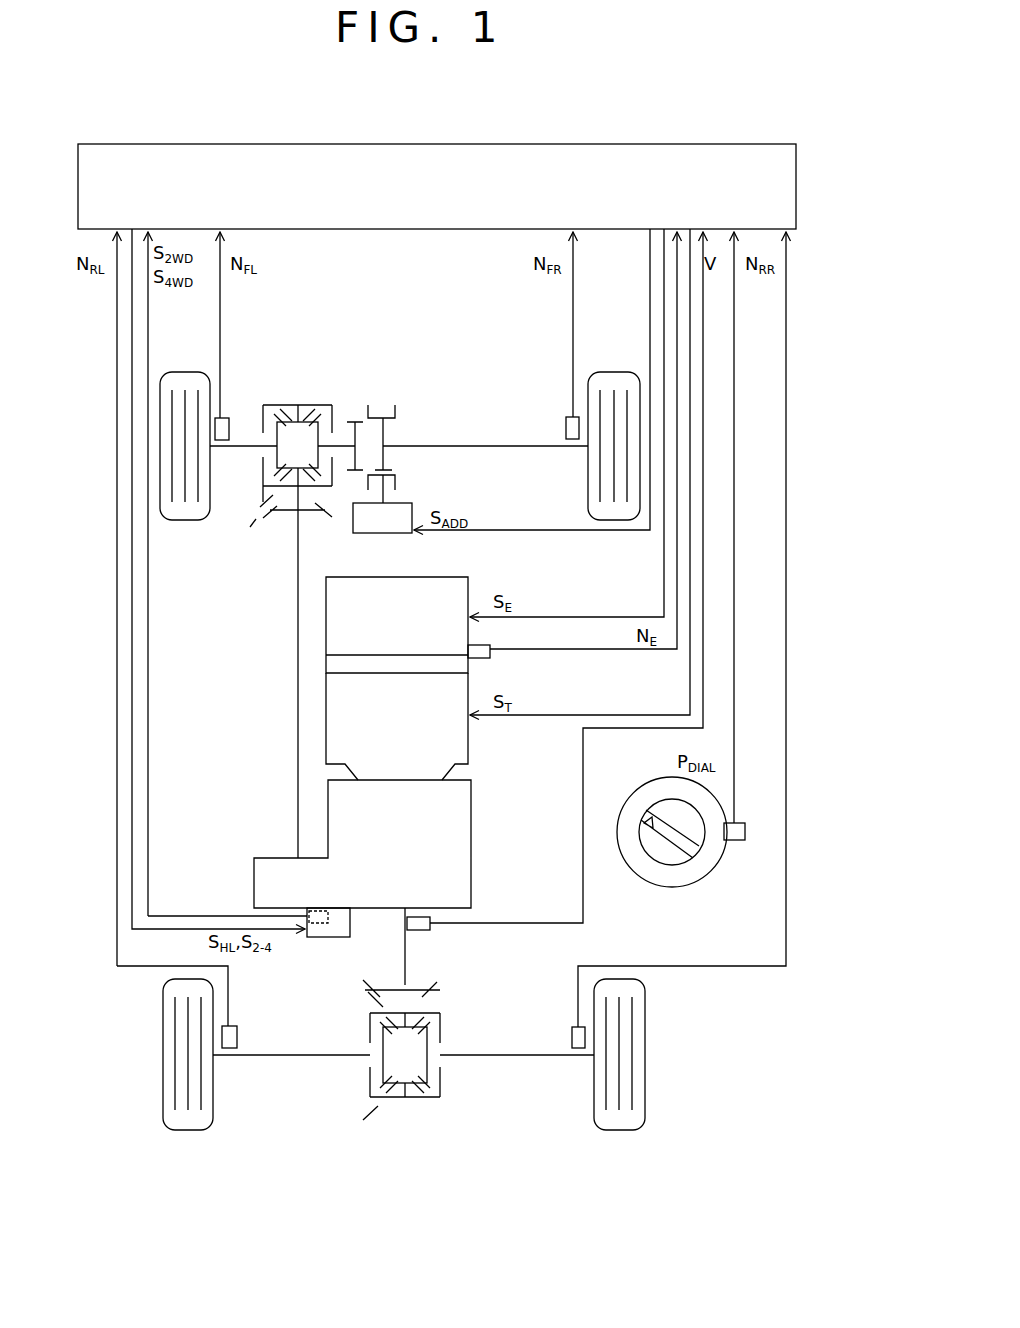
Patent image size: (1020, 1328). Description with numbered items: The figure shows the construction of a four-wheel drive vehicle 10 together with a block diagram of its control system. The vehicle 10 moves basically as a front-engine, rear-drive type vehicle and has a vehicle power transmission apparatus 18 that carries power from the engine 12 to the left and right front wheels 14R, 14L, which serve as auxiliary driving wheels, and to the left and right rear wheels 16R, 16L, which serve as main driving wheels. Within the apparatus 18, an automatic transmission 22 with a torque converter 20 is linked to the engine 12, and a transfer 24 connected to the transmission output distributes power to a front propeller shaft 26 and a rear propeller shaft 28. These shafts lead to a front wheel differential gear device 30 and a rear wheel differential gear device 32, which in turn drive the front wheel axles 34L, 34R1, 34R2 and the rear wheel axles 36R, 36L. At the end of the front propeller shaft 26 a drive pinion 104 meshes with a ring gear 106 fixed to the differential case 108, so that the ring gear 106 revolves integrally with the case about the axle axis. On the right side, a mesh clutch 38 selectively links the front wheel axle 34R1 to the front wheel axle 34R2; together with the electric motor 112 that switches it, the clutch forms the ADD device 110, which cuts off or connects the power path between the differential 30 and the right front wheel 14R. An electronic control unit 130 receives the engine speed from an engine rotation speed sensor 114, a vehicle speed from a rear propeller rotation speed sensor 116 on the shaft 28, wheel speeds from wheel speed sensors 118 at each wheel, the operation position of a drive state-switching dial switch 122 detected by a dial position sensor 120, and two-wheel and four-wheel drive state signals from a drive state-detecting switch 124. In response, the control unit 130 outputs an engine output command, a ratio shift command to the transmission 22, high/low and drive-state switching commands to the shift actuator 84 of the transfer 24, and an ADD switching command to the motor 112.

The vehicle 10 is at (626, 106).
The engine 12 is at (468, 590).
The left front wheel 14L is at (178, 382).
The right front wheel 14R is at (605, 382).
The left rear wheel 16L is at (161, 1098).
The right rear wheel 16R is at (642, 1095).
The vehicle power transmission apparatus 18 is at (373, 1180).
The torque converter 20 is at (462, 668).
The automatic transmission 22 is at (458, 753).
The transfer 24 is at (460, 890).
The front propeller shaft 26 is at (298, 702).
The rear propeller shaft 28 is at (407, 963).
The front wheel differential gear device 30 is at (252, 526).
The rear wheel differential gear device 32 is at (412, 1126).
The left front wheel axle 34L is at (238, 449).
The front wheel axle 34R1 is at (345, 449).
The front wheel axle 34R2 is at (525, 449).
The left rear wheel axle 36L is at (283, 1057).
The right rear wheel axle 36R is at (502, 1057).
The mesh clutch 38 is at (364, 394).
The shift actuator 84 is at (343, 938).
The drive pinion 104 is at (268, 522).
The ring gear 106 is at (271, 395).
The differential case 108 is at (314, 400).
The ADD device 110 is at (376, 346).
The electric motor 112 is at (374, 531).
The engine rotation speed sensor 114 is at (486, 643).
The rear propeller rotation speed sensor 116 is at (418, 929).
The wheel speed sensors 118 is at (232, 425).
The dial position sensor 120 is at (734, 842).
The drive state-switching dial switch 122 is at (670, 878).
The drive state-detecting switch 124 is at (318, 925).
The electronic control unit 130 is at (322, 153).